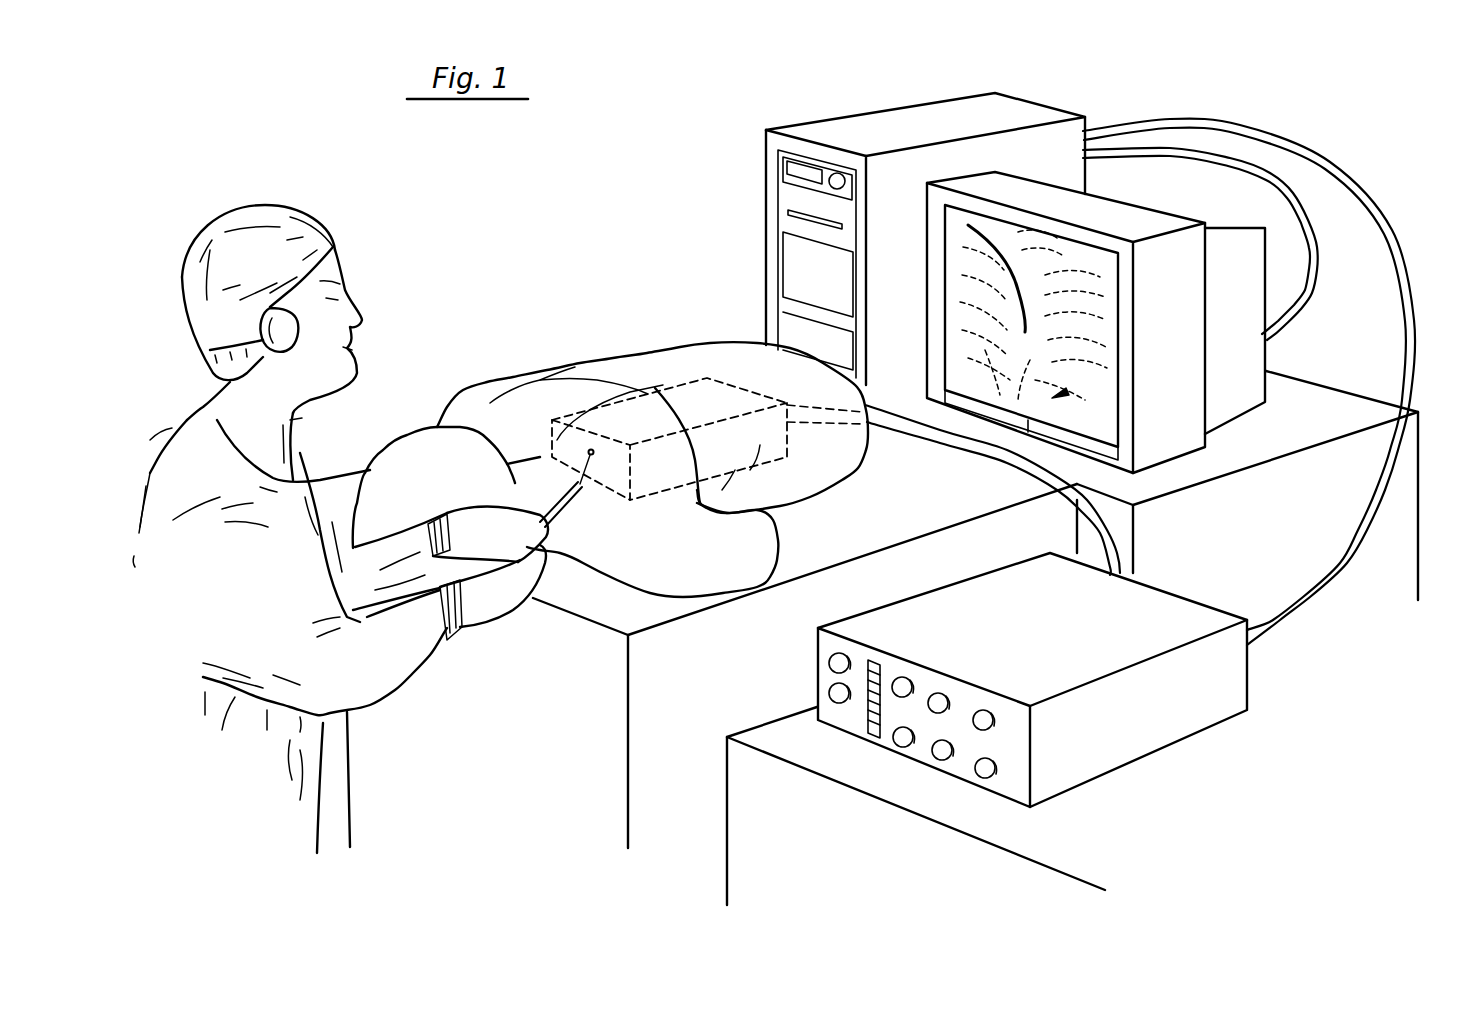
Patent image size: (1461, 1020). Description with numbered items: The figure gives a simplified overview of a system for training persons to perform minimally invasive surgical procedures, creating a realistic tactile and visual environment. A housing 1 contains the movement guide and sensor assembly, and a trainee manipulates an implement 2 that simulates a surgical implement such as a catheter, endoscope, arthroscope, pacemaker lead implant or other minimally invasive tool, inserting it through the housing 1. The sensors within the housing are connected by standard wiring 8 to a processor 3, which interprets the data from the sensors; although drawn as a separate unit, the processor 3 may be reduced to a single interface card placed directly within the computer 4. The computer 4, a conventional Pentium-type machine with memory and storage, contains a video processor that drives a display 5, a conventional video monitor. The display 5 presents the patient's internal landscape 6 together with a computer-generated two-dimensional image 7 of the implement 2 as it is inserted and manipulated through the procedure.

The housing 1 is at (692, 413).
The implement 2 is at (571, 502).
The processor 3 is at (1045, 643).
The computer 4 is at (863, 134).
The display 5 is at (1185, 357).
The patient's internal landscape 6 is at (1066, 388).
The computer-generated two-dimensional image 7 is at (993, 247).
The standard wiring 8 is at (937, 437).